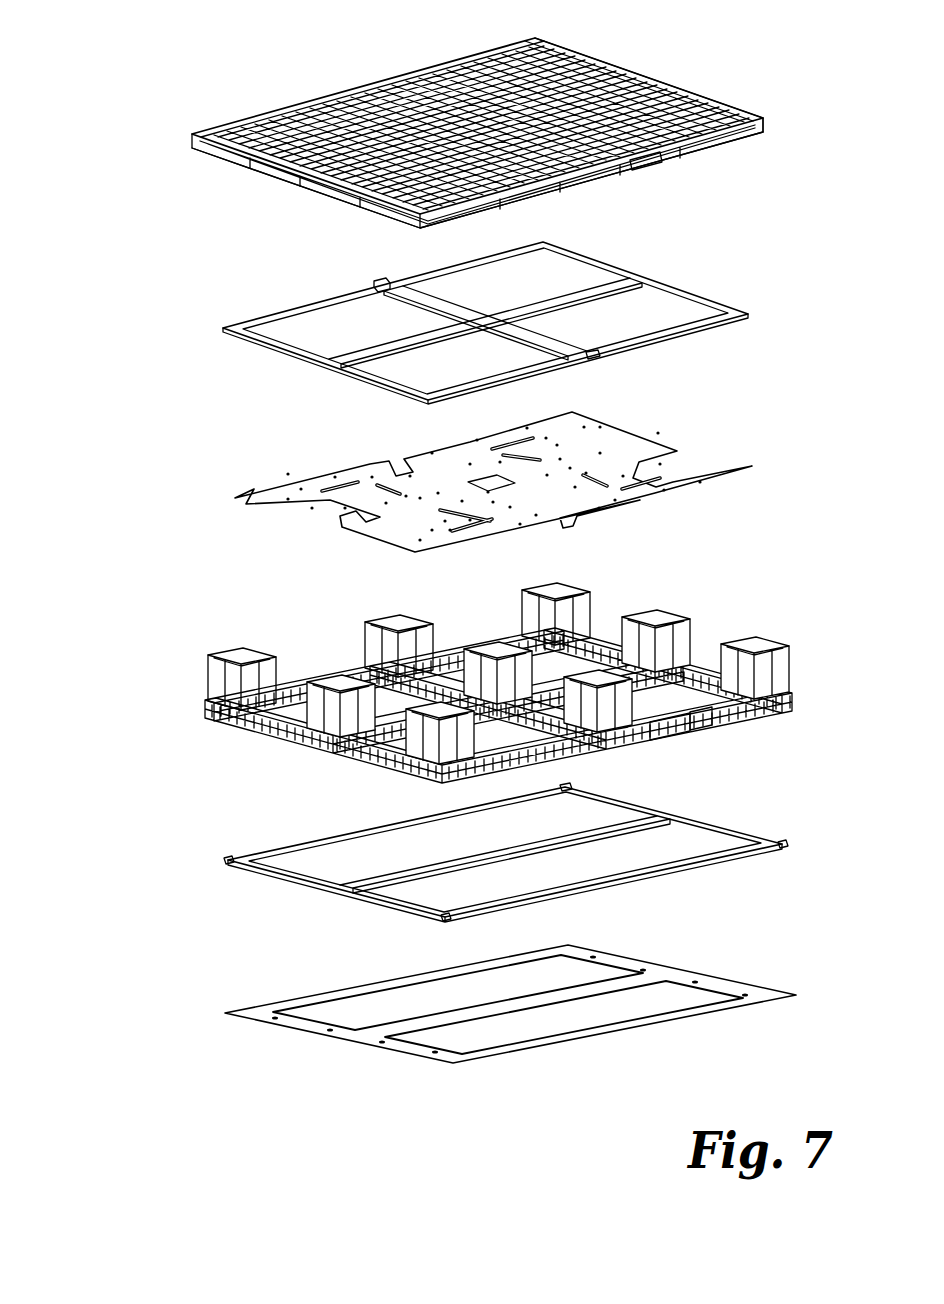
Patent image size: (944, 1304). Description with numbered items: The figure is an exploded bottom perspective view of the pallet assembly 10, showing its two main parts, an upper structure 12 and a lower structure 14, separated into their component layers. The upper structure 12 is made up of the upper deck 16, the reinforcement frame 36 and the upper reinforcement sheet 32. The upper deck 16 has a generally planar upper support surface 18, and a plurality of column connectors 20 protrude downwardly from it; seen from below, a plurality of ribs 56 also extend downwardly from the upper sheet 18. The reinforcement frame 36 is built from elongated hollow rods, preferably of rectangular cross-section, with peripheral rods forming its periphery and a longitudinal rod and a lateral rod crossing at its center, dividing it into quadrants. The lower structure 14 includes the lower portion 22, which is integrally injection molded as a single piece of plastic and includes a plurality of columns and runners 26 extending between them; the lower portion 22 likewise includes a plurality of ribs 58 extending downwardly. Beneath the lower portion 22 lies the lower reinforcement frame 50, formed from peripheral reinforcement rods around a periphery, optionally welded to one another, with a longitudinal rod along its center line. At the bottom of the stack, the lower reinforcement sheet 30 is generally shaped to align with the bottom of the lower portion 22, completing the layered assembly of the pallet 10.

The pallet assembly 10 is at (72, 8).
The upper structure 12 is at (141, 27).
The lower structure 14 is at (141, 570).
The upper deck 16 is at (765, 122).
The upper support surface 18 is at (657, 83).
The column connectors 20 is at (735, 142).
The lower portion 22 is at (524, 678).
The runners 26 is at (673, 716).
The lower reinforcement sheet 30 is at (757, 984).
The upper reinforcement sheet 32 is at (703, 457).
The reinforcement frame 36 is at (713, 300).
The lower reinforcement frame 50 is at (766, 840).
The ribs 56 is at (651, 147).
The ribs 58 is at (694, 712).